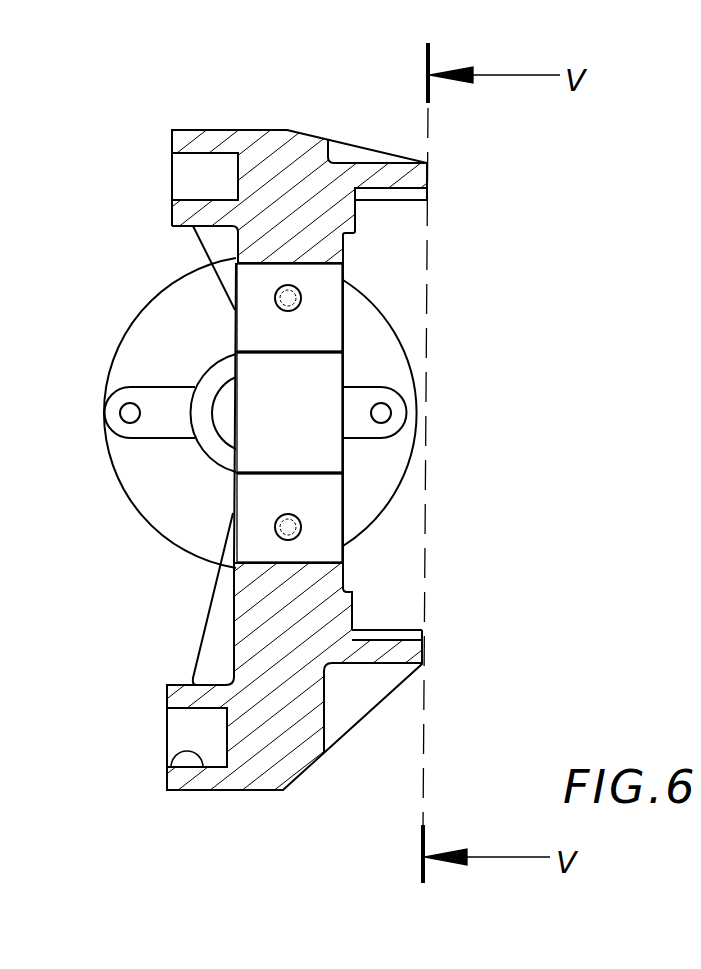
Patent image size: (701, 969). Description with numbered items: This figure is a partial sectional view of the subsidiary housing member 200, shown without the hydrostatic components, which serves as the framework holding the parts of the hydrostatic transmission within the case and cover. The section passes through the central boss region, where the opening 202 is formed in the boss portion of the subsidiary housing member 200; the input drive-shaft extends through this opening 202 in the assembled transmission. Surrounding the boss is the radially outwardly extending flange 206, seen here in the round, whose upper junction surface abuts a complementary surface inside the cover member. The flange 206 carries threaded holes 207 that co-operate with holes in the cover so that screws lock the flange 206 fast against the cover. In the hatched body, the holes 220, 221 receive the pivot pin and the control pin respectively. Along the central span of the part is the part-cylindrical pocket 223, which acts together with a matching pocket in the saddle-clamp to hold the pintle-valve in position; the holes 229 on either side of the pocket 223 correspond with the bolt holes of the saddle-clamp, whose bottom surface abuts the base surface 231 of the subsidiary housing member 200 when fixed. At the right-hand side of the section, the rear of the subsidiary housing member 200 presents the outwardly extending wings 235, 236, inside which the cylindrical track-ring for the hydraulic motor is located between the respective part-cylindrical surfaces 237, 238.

The subsidiary housing member 200 is at (278, 130).
The hole for the control pin 221 is at (193, 167).
The hole for the pivot pin 220 is at (168, 750).
The wing 236 is at (413, 177).
The part-cylindrical surface 238 is at (390, 193).
The part-cylindrical surface 237 is at (385, 625).
The wing 235 is at (407, 657).
The flange 206 is at (143, 310).
The opening 202 is at (222, 432).
The threaded holes 207 is at (127, 407).
The holes 229 is at (300, 293).
The part-cylindrical pocket 223 is at (327, 428).
The base surface 231 is at (337, 345).